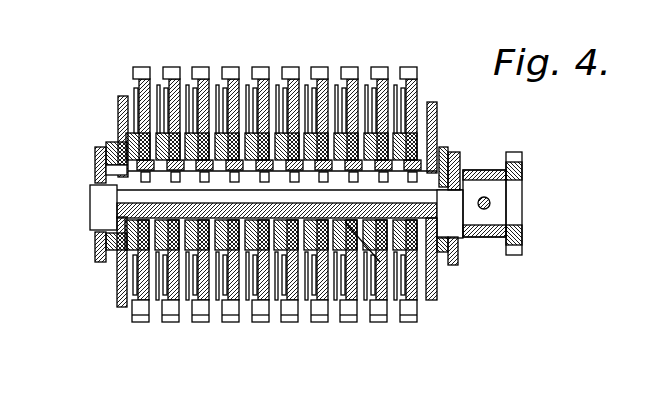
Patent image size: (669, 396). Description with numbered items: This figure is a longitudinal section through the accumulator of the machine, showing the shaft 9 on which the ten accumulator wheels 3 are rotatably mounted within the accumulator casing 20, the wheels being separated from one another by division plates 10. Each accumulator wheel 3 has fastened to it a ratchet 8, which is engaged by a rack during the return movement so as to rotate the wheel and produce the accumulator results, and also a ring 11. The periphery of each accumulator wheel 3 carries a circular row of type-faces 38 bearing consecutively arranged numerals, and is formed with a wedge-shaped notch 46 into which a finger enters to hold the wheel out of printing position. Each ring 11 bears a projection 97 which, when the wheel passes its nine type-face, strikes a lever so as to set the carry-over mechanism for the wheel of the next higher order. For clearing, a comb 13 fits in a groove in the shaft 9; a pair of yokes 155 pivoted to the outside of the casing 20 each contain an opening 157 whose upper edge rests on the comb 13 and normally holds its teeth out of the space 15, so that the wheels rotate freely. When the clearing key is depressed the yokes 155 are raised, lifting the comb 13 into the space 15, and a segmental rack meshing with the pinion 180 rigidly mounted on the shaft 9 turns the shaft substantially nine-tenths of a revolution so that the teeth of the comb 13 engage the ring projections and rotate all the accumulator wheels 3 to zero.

The accumulator wheel 3 is at (280, 84).
The ratchet 8 is at (176, 177).
The shaft 9 is at (117, 193).
The division plate 10 is at (140, 322).
The ring 11 is at (236, 180).
The comb 13 is at (295, 180).
The space 15 is at (384, 181).
The accumulator casing 20 is at (437, 113).
The type-face 38 is at (200, 67).
The wedge-shaped notch 46 is at (276, 322).
The projection 97 is at (385, 265).
The yoke 155 is at (95, 155).
The opening 157 is at (95, 237).
The pinion 180 is at (522, 172).